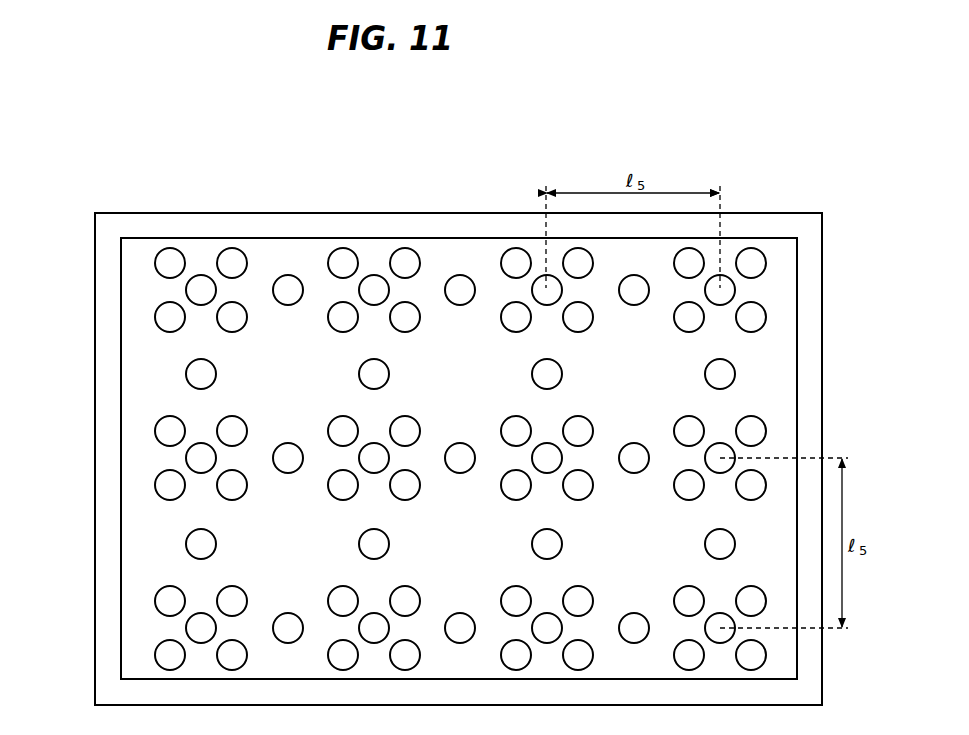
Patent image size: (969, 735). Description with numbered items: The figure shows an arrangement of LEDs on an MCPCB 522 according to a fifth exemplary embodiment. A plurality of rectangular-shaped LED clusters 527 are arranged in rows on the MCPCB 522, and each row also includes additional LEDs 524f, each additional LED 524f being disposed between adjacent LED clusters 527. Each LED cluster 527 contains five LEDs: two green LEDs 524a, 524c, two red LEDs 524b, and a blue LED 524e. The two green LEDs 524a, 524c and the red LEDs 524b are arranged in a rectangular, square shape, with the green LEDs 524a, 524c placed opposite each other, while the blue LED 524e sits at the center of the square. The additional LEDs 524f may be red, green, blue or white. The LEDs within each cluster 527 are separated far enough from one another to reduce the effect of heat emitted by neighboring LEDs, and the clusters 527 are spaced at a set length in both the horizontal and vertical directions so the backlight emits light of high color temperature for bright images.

The MCPCB 522 is at (783, 283).
The rectangular-shaped LED cluster 527 is at (181, 207).
The green LED 524a is at (168, 248).
The red LED 524b is at (230, 248).
The green LED 524c is at (251, 249).
The blue LED 524e is at (199, 275).
The additional LED 524f is at (294, 278).